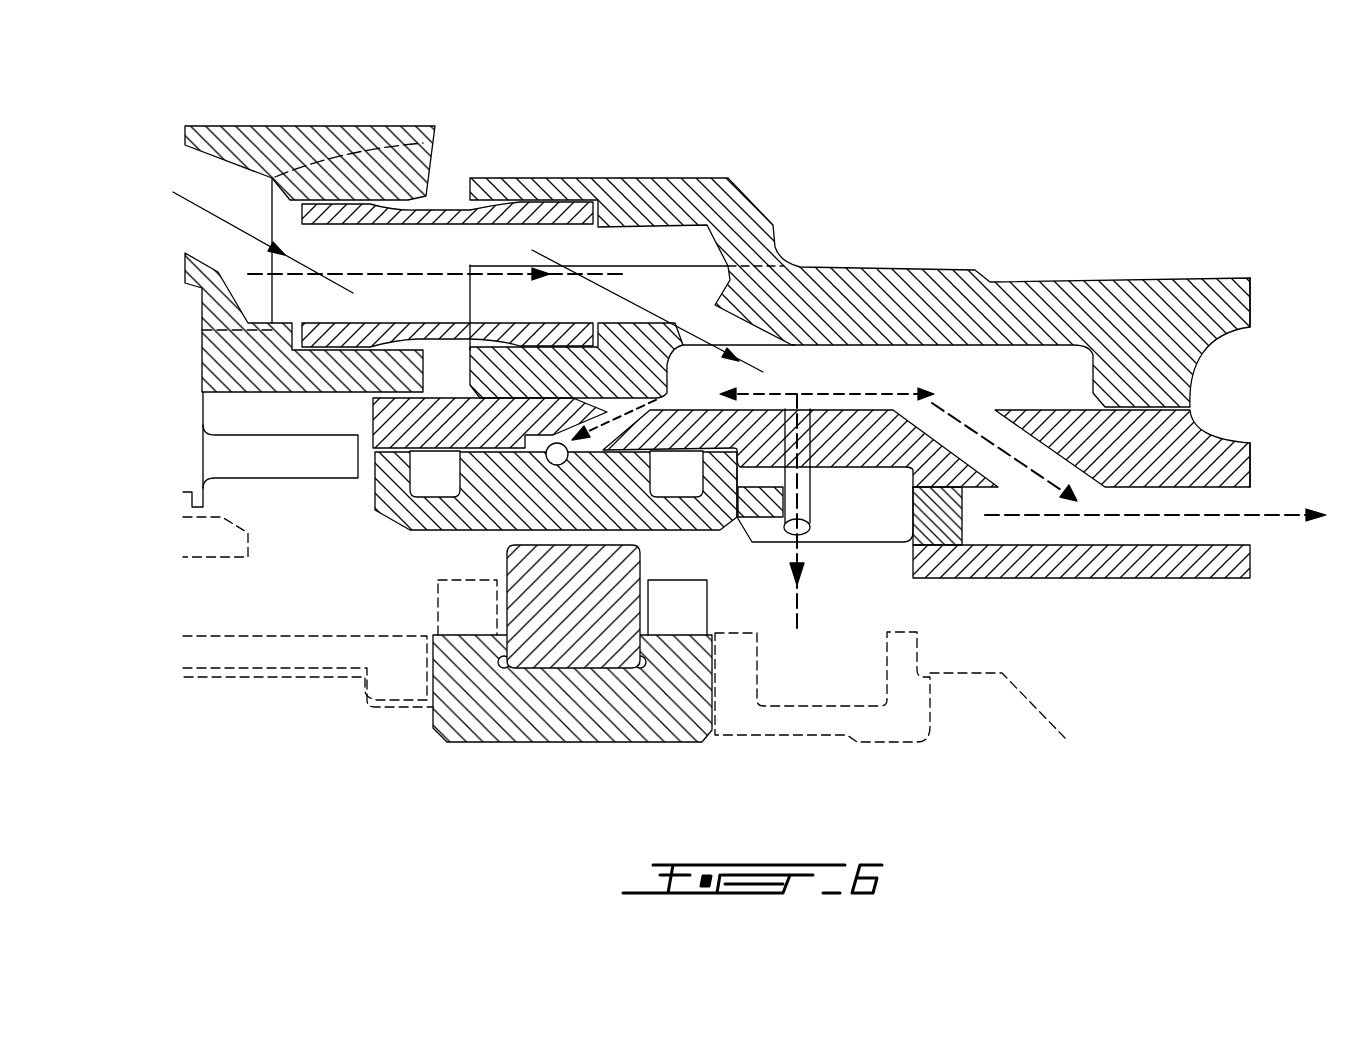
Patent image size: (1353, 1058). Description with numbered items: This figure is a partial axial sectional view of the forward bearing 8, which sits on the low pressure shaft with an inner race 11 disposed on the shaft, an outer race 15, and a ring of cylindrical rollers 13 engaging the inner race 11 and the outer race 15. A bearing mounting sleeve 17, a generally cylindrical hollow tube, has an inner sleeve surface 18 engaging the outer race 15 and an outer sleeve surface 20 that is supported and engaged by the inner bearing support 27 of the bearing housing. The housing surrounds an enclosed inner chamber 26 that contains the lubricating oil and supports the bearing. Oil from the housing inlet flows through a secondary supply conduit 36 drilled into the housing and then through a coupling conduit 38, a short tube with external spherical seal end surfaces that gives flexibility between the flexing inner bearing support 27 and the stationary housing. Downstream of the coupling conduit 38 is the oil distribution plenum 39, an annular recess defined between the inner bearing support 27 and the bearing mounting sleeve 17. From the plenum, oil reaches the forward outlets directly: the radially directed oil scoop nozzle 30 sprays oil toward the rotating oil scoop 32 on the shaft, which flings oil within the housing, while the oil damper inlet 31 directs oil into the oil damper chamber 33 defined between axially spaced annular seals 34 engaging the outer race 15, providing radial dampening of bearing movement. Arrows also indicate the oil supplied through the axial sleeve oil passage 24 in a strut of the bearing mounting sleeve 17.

The forward bearing 8 is at (526, 694).
The inner race 11 is at (552, 700).
The cylindrical rollers 13 is at (585, 612).
The outer race 15 is at (548, 465).
The bearing mounting sleeve 17 is at (1155, 582).
The inner sleeve surface 18 is at (862, 467).
The outer sleeve surface 20 is at (1062, 405).
The sleeve oil passage 24 is at (1066, 528).
The enclosed inner chamber 26 is at (291, 740).
The inner bearing support 27 is at (893, 267).
The radially directed oil scoop nozzle 30 is at (813, 528).
The oil damper inlet 31 is at (612, 418).
The oil scoop 32 is at (817, 723).
The oil damper chamber 33 is at (403, 514).
The annular seals 34 is at (449, 493).
The secondary supply conduit 36 is at (212, 185).
The coupling conduit 38 is at (437, 208).
The oil distribution plenum 39 is at (983, 370).